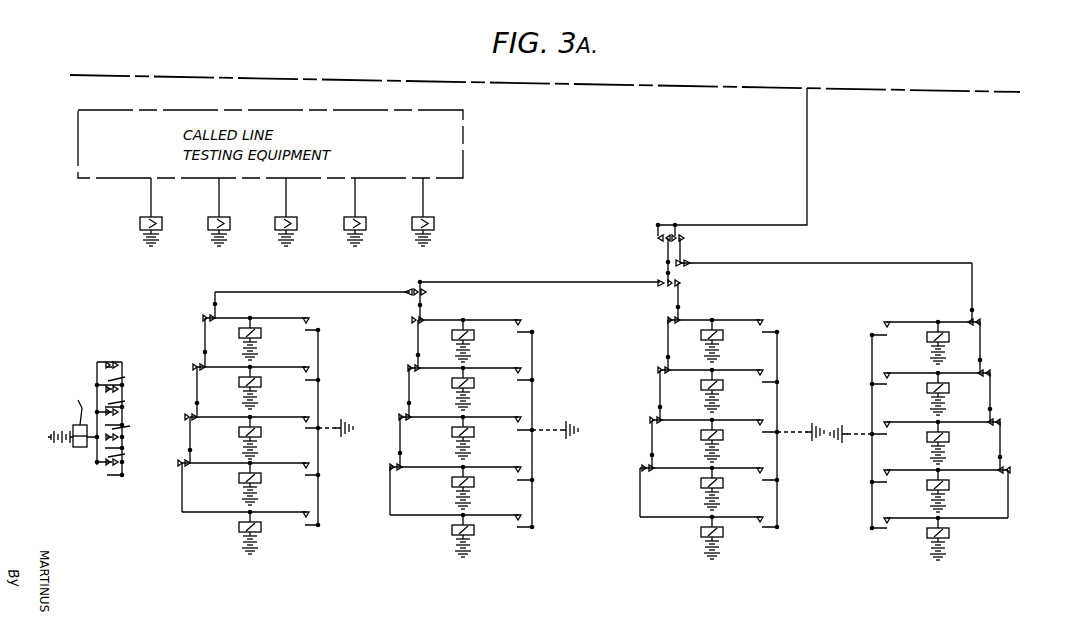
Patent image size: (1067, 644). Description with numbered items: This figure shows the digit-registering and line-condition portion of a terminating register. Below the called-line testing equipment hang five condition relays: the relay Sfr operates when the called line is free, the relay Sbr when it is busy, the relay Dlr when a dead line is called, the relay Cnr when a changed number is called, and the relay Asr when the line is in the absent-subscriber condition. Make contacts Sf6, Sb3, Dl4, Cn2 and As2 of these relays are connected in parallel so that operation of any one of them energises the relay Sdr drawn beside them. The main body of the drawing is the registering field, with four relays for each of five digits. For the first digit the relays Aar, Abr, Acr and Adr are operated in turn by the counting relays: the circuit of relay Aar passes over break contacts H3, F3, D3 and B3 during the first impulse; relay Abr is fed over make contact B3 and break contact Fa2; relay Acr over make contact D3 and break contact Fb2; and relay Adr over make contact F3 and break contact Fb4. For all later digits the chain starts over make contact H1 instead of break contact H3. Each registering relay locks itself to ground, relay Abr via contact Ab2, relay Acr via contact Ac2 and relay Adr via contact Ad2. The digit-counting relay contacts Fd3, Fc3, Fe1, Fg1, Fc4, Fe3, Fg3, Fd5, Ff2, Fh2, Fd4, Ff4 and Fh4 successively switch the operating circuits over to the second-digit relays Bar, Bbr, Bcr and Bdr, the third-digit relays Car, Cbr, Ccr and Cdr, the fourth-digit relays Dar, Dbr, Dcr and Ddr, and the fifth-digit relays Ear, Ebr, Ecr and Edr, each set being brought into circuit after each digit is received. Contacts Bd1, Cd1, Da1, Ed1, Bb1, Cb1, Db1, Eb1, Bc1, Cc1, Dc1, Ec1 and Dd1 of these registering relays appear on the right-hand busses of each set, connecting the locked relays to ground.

The line-free relay Sfr is at (135, 212).
The line-busy relay Sbr is at (206, 212).
The dead-line relay Dlr is at (271, 212).
The changed-number relay Cnr is at (338, 212).
The absent-subscriber relay Asr is at (406, 212).
The make contact of relay Sfr Sf6 is at (112, 356).
The make contact of relay Sbr Sb3 is at (123, 380).
The make contact of relay Asr As2 is at (122, 402).
The make contact of relay Dlr Dl4 is at (129, 427).
The make contact of relay Cnr Cn2 is at (123, 461).
The relay Sdr is at (69, 433).
The contact of digit-counting relay Fdr Fd3 is at (196, 308).
The locking contact of relay Adr Ad2 is at (596, 315).
The first-digit registering relay Aar is at (236, 336).
The contact of digit-counting relay Fcr Fc3 is at (186, 359).
The contact of relay Bdr Bd1 is at (595, 363).
The second-digit registering relay Bar is at (236, 385).
The contact of digit-counting relay Fer Fe1 is at (175, 409).
The contact of relay Cdr Cd1 is at (594, 412).
The third-digit registering relay Car is at (236, 435).
The contact of digit-counting relay Fgr Fg1 is at (196, 455).
The contact of relay Dar Da1 is at (294, 456).
The fourth-digit registering relay Dar is at (236, 481).
The contact of relay Edr Ed1 is at (592, 523).
The fifth-digit registering relay Ear is at (236, 530).
The contact of counting relay Br B3 is at (409, 283).
The contact of digit-counting relay Far Fa2 is at (408, 310).
The locking contact of relay Abr Ab2 is at (530, 314).
The first-digit registering relay Abr is at (449, 338).
The contact of digit-counting relay Fcr Fc4 is at (400, 360).
The contact of relay Bbr Bb1 is at (510, 361).
The second-digit registering relay Bbr is at (449, 386).
The contact of digit-counting relay Fer Fe3 is at (391, 409).
The contact of relay Cbr Cb1 is at (510, 410).
The third-digit registering relay Cbr is at (449, 435).
The contact of digit-counting relay Fgr Fg3 is at (382, 459).
The contact of relay Dbr Db1 is at (509, 460).
The fourth-digit registering relay Dbr is at (449, 485).
The contact of relay Ebr Eb1 is at (508, 508).
The fifth-digit registering relay Ebr is at (449, 533).
The make contact of counting relay Hr H1 is at (652, 234).
The break contact of counting relay Hr H3 is at (689, 234).
The contact of counting relay Fr F3 is at (686, 257).
The contact of counting relay Dr D3 is at (659, 275).
The break contact of digit-counting relay Fbr Fb2 is at (659, 313).
The locking contact of relay Acr Ac2 is at (750, 313).
The first-digit registering relay Acr is at (698, 338).
The contact of digit-counting relay Fdr Fd5 is at (650, 362).
The contact of relay Bcr Bc1 is at (752, 363).
The second-digit registering relay Bcr is at (698, 388).
The contact of digit-counting relay Ffr Ff2 is at (641, 412).
The contact of relay Ccr Cc1 is at (752, 413).
The third-digit registering relay Ccr is at (698, 438).
The contact of digit-counting relay Fhr Fh2 is at (632, 460).
The contact of relay Dcr Dc1 is at (752, 461).
The fourth-digit registering relay Dcr is at (698, 486).
The contact of relay Ecr Ec1 is at (752, 511).
The fifth-digit registering relay Ecr is at (698, 535).
The break contact of digit-counting relay Fbr Fb4 is at (987, 315).
The first-digit registering relay Adr is at (950, 336).
The contact of digit-counting relay Fdr Fd4 is at (997, 367).
The second-digit registering relay Bdr is at (958, 400).
The contact of digit-counting relay Ffr Ff4 is at (1004, 415).
The third-digit registering relay Cdr is at (950, 436).
The contact of digit-counting relay Fhr Fh4 is at (1016, 463).
The contact of relay Ddr Dd1 is at (891, 463).
The fourth-digit registering relay Ddr is at (950, 484).
The fifth-digit registering relay Edr is at (950, 532).